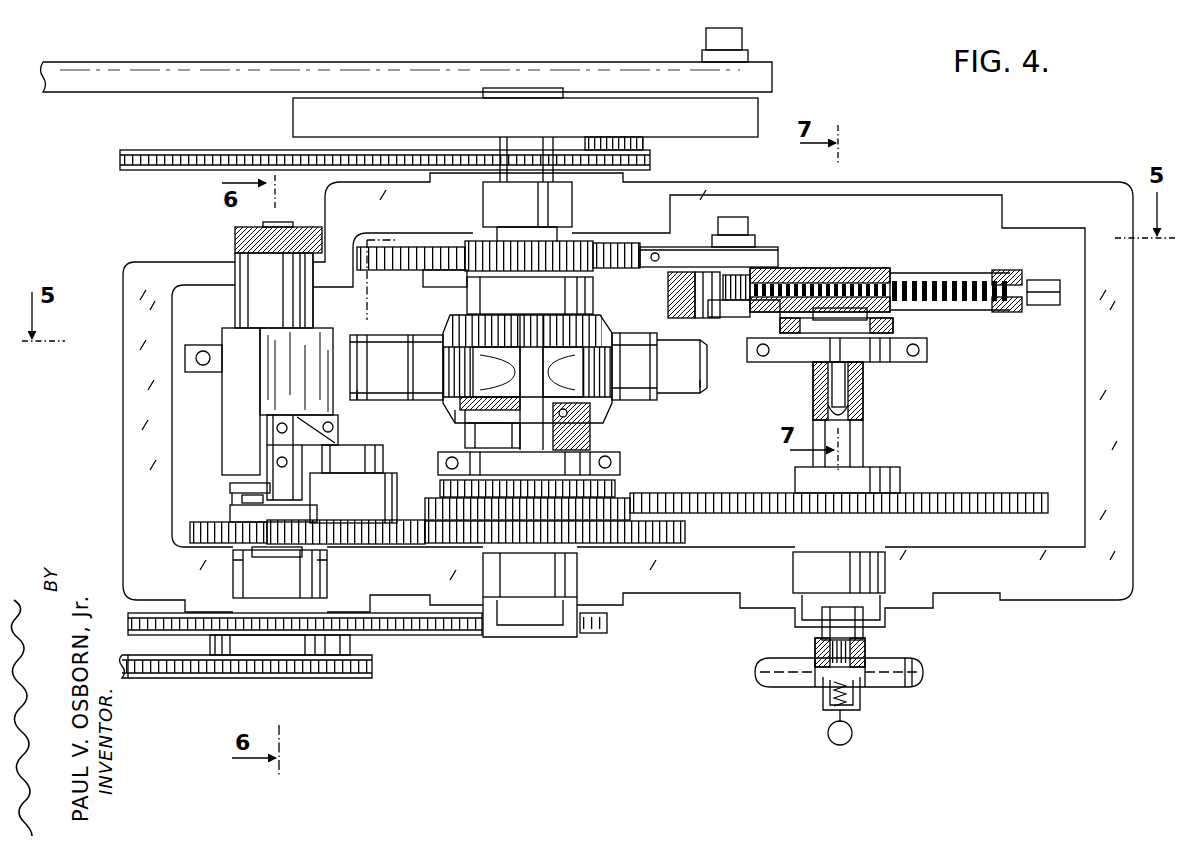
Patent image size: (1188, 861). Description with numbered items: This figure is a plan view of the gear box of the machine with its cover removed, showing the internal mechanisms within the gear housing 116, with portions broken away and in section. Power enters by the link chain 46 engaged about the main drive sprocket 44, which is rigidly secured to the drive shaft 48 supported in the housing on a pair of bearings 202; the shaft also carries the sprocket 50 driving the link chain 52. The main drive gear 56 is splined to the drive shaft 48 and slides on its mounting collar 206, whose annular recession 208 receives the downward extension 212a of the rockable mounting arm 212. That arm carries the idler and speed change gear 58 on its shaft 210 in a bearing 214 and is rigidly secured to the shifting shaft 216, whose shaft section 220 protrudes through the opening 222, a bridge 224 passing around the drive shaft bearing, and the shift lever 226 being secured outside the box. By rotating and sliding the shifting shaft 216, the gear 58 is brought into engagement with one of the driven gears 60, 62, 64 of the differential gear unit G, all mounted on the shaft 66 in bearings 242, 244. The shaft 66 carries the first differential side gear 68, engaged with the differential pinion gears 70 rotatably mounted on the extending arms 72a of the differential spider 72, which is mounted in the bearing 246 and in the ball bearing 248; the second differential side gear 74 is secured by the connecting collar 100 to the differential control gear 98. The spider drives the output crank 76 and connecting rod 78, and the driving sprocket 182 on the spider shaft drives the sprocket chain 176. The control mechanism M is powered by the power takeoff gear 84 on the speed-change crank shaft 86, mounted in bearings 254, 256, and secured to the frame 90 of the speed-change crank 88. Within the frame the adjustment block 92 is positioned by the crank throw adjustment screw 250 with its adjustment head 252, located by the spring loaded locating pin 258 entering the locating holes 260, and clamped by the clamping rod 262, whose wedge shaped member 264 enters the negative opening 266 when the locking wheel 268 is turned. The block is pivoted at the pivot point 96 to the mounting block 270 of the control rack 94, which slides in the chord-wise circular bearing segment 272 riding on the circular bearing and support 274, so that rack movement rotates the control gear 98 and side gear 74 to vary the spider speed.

The gear housing 116 is at (1042, 177).
The connecting rod 78 is at (572, 63).
The output crank 76 is at (758, 114).
The sprocket chain 176 is at (163, 158).
The driving sprocket 182 is at (652, 160).
The differential spider 72 is at (532, 176).
The bearing 246 is at (490, 214).
The circular bearing and support 274 is at (431, 268).
The differential control gear 98 is at (580, 240).
The control rack 94 is at (626, 246).
The connecting collar 100 is at (465, 290).
The second differential side gear 74 is at (600, 318).
The ball bearing 248 is at (600, 421).
The differential gear unit G is at (643, 429).
The first differential side gear 68 is at (452, 422).
The shaft 66 is at (527, 448).
The bearing 244 is at (612, 462).
The differential pinion gears 70 is at (415, 325).
The extending arms 72a is at (357, 398).
The chord-wise circular bearing segment 272 is at (640, 248).
The mounting block 270 is at (770, 256).
The pivot point 96 is at (742, 222).
The locating holes 260 is at (862, 259).
The adjustment block 92 is at (883, 270).
The speed-change crank 88 is at (983, 258).
The crank throw adjustment screw 250 is at (937, 270).
The frame 90 is at (990, 272).
The adjustment head 252 is at (1047, 308).
The wedge shaped member 264 is at (830, 334).
The negative opening 266 is at (752, 346).
The bearing 256 is at (885, 364).
The clamping rod 262 is at (863, 412).
The spring loaded locating pin 258 is at (833, 387).
The locking wheel 268 is at (762, 683).
The speed-change crank shaft 86 is at (865, 460).
The power takeoff gear 84 is at (1018, 493).
The bearing 254 is at (808, 572).
The control mechanism M is at (947, 366).
The driven gear 60 is at (617, 490).
The driven gear 62 is at (592, 522).
The driven gear 64 is at (640, 543).
The idler and speed change gear 58 is at (358, 545).
The main drive gear 56 is at (190, 531).
The shift lever 226 is at (238, 236).
The opening 222 is at (232, 277).
The shaft section 220 is at (242, 300).
The shifting shaft 216 is at (221, 332).
The bridge 224 is at (300, 378).
The bearings 202 is at (217, 368).
The rockable mounting arm 212 is at (302, 499).
The downward extension 212a is at (262, 490).
The annular recession 208 is at (236, 497).
The mounting collar 206 is at (232, 514).
The shaft 210 is at (380, 455).
The bearing 214 is at (360, 515).
The drive shaft 48 is at (240, 578).
The link chain 46 is at (452, 636).
The main drive sprocket 44 is at (260, 632).
The sprocket 50 is at (333, 678).
The link chain 52 is at (156, 680).
The bearing 242 is at (538, 590).